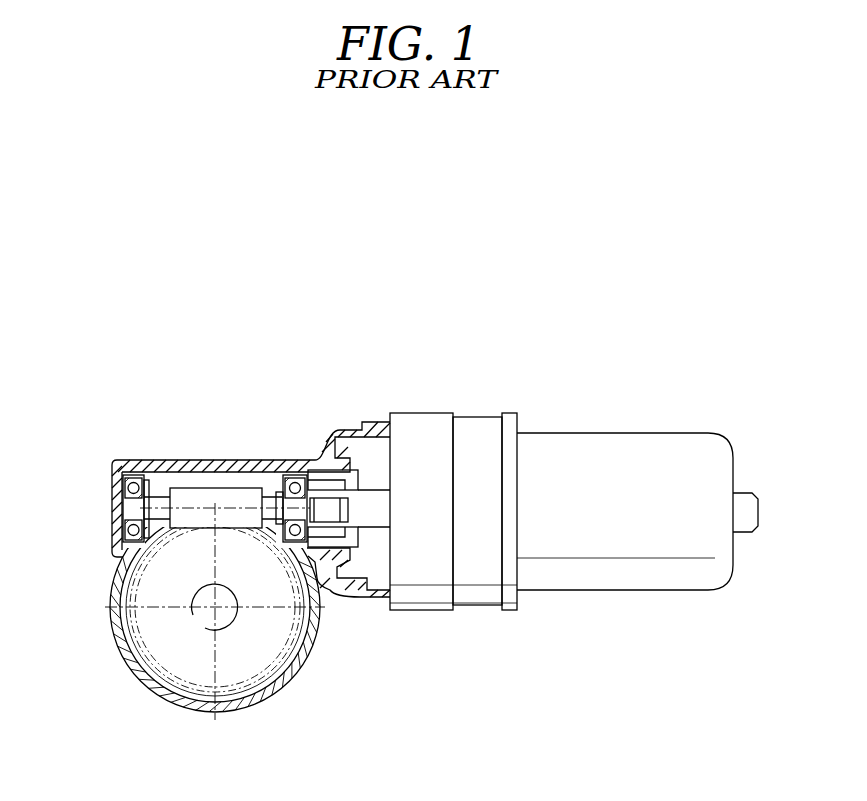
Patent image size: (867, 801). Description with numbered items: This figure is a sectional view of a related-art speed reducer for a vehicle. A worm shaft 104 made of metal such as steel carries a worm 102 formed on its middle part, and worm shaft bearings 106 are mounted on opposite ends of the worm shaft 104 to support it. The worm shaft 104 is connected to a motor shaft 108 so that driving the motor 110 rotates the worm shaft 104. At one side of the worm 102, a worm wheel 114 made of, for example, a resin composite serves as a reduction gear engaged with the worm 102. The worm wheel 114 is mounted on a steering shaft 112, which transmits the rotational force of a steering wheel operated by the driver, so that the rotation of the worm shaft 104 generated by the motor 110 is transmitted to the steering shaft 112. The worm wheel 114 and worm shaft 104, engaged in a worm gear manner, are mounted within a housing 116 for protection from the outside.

The worm 102 is at (203, 488).
The worm shaft 104 is at (162, 478).
The worm shaft bearings 106 is at (135, 474).
The motor shaft 108 is at (378, 497).
The motor 110 is at (543, 446).
The steering shaft 112 is at (233, 624).
The worm wheel 114 is at (312, 631).
The housing 116 is at (112, 522).